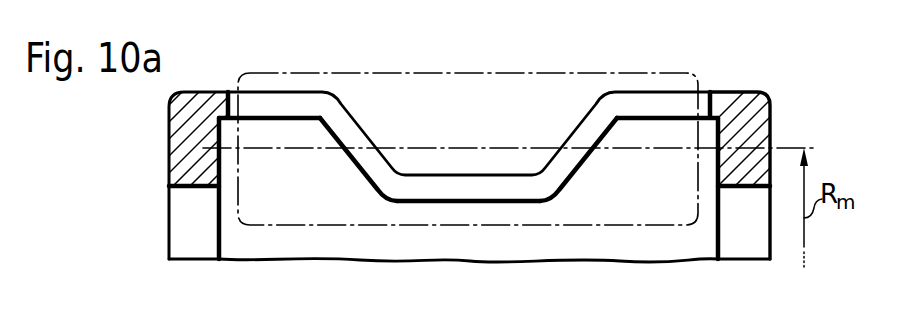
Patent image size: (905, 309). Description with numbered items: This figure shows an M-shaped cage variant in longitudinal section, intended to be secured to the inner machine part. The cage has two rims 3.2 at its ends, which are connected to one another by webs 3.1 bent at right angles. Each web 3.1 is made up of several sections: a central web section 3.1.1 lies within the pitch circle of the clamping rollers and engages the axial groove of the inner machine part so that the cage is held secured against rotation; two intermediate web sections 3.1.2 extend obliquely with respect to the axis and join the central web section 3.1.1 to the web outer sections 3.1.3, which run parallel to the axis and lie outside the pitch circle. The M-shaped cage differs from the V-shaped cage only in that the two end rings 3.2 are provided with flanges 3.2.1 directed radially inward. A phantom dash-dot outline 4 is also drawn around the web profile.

The web 3.1 is at (440, 164).
The central web section 3.1.1 is at (470, 190).
The intermediate web section 3.1.2 is at (353, 137).
The web outer section 3.1.3 is at (270, 102).
The rim 3.2 is at (198, 100).
The flange 3.2.1 is at (195, 178).
The reference body (phantom outline) 4 is at (498, 78).